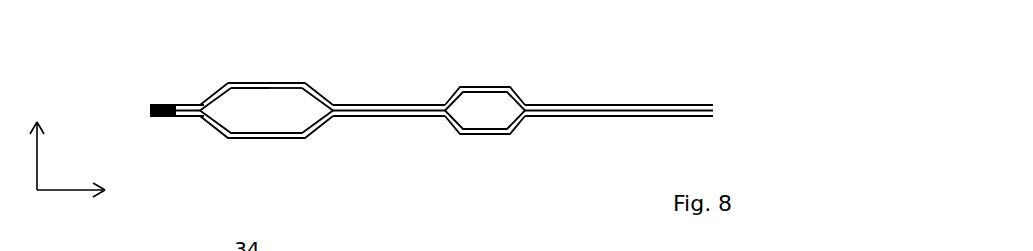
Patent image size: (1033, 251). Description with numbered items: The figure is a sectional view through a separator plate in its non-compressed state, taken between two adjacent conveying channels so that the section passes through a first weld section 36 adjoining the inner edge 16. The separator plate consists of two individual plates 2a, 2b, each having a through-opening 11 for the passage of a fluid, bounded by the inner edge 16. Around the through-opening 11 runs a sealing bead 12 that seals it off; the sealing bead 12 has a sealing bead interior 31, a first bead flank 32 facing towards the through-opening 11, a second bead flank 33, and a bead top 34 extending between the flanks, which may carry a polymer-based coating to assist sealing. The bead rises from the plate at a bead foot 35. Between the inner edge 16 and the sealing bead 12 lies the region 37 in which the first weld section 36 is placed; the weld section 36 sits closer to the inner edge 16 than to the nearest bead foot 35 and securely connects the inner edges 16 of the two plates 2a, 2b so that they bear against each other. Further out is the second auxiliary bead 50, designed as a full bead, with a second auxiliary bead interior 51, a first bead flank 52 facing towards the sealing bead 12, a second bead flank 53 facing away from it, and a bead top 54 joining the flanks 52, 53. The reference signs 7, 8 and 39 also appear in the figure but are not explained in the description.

The z-axis direction 7 is at (37, 147).
The x-axis direction 8 is at (57, 190).
The through-opening 11 is at (124, 113).
The inner edge 16 is at (156, 104).
The region 37 is at (188, 105).
The first weld section 36 is at (167, 118).
The bead foot 35 is at (201, 114).
The sealing bead interior 31 is at (256, 122).
The first bead flank 32 is at (226, 88).
The bead top 34 is at (259, 81).
The sealing bead 12 is at (286, 82).
The second bead flank 33 is at (318, 92).
The second auxiliary bead interior 51 is at (474, 121).
The bead top 54 is at (473, 86).
The second auxiliary bead 50 is at (492, 86).
The first bead flank 52 is at (456, 130).
The second bead flank 53 is at (516, 130).
The output waveguide 39 is at (584, 108).
The individual plate 2a is at (702, 105).
The individual plate 2b is at (704, 116).